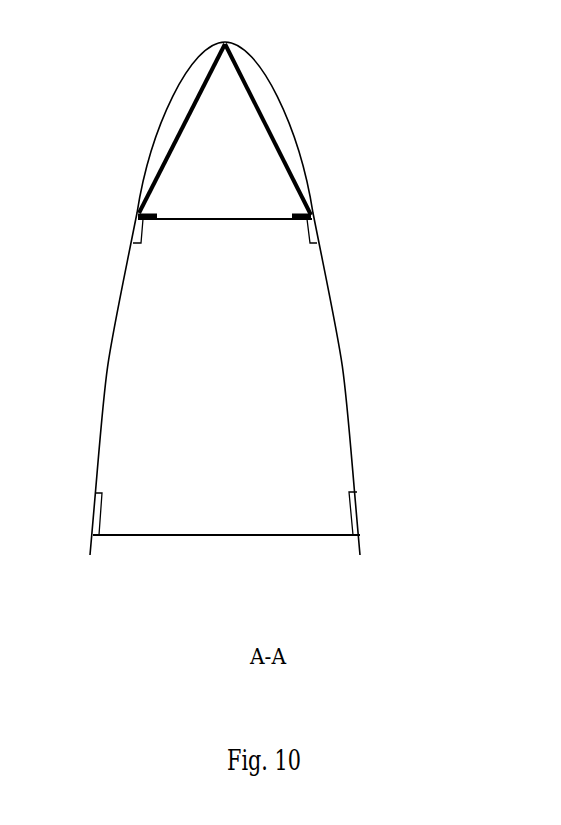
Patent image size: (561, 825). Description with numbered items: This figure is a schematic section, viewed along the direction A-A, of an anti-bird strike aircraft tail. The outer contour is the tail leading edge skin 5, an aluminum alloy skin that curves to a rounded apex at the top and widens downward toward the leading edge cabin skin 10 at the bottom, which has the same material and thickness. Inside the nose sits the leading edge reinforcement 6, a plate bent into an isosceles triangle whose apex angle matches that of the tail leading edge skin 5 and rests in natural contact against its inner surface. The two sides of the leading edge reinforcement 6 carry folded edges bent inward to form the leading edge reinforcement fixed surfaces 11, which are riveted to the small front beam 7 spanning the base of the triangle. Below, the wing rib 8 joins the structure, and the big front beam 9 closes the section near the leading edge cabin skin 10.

The tail leading edge skin 5 is at (278, 97).
The leading edge reinforcement 6 is at (182, 130).
The small front beam 7 is at (231, 217).
The wing rib 8 is at (133, 237).
The big front beam 9 is at (358, 507).
The leading edge cabin skin 10 is at (200, 537).
The leading edge reinforcement fixed surface 11 is at (312, 220).